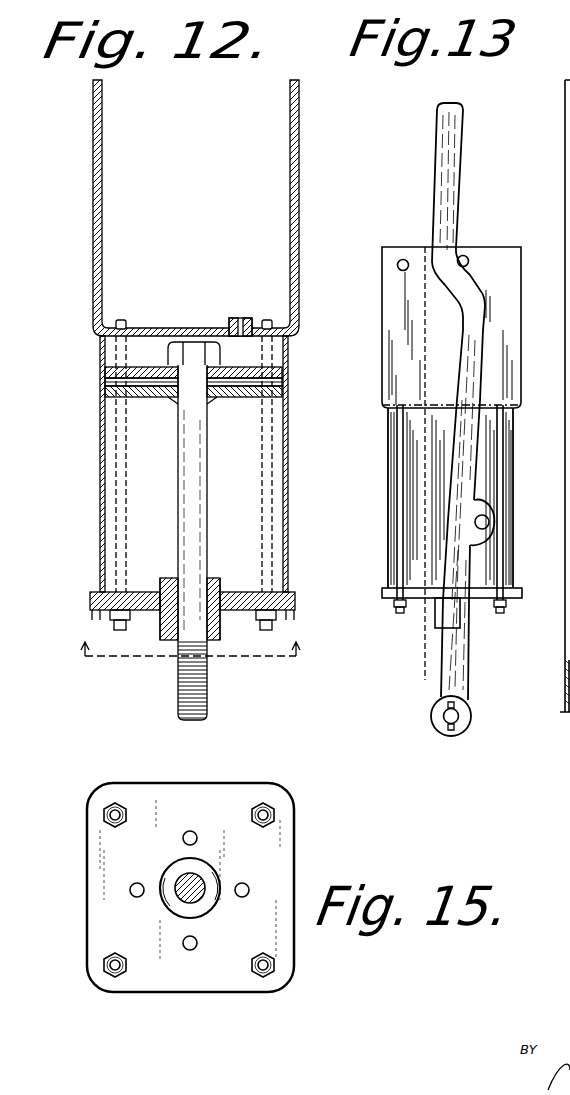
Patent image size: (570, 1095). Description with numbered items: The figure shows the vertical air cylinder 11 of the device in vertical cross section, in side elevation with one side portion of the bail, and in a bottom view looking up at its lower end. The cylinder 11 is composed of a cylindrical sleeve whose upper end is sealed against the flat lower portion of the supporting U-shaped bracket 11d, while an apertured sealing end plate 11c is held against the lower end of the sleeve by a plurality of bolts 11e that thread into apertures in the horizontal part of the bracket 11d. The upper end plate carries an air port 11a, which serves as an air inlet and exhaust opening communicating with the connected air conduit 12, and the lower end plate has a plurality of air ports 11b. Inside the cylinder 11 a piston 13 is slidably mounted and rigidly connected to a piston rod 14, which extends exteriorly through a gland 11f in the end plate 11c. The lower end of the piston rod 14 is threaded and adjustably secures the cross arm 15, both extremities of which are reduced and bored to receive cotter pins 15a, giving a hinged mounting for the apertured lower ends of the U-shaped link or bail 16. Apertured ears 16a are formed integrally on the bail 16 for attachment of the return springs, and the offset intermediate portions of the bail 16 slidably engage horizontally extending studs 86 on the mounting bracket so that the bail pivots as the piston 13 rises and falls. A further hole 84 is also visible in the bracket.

In FIG. 12, the cylinder 11 is at (92, 486).
In FIG. 13, the cylinder 11 is at (524, 557).
In FIG. 12, the air port 11a is at (232, 318).
In FIG. 15, the air port 11a is at (190, 950).
In FIG. 12, the air ports 11b is at (120, 630).
In FIG. 12, the sealing end plate 11c is at (92, 604).
In FIG. 13, the sealing end plate 11c is at (520, 594).
In FIG. 15, the sealing end plate 11c is at (305, 812).
In FIG. 12, the U-shaped bracket 11d is at (299, 165).
In FIG. 13, the U-shaped bracket 11d is at (504, 322).
In FIG. 15, the U-shaped bracket 11d is at (248, 888).
In FIG. 12, the bolts 11e is at (121, 322).
In FIG. 13, the bolts 11e is at (400, 424).
In FIG. 15, the bolts 11e is at (110, 976).
In FIG. 12, the gland 11f is at (212, 642).
In FIG. 13, the gland 11f is at (435, 616).
In FIG. 15, the gland 11f is at (200, 870).
In FIG. 12, the air conduit 12 is at (248, 316).
In FIG. 13, the air conduit 12 is at (424, 244).
In FIG. 12, the piston 13 is at (105, 380).
In FIG. 12, the piston rod 14 is at (207, 474).
In FIG. 15, the piston rod 14 is at (178, 892).
In FIG. 12, the cross arm 15 is at (190, 670).
In FIG. 13, the cross arm 15 is at (458, 716).
In FIG. 13, the cotter pins 15a is at (464, 732).
In FIG. 13, the bail 16 is at (465, 654).
In FIG. 13, the apertured ears 16a is at (488, 514).
In FIG. 13, the plate hole 84 is at (397, 265).
In FIG. 13, the studs 86 is at (466, 256).